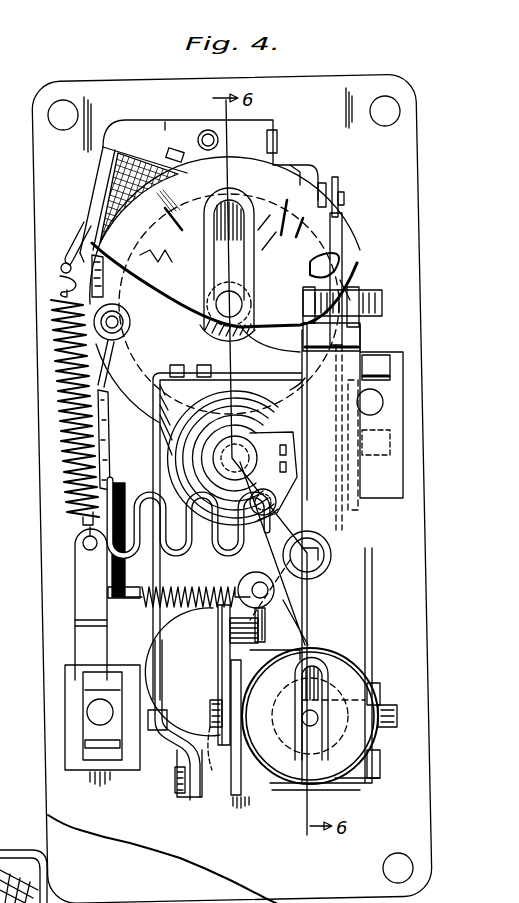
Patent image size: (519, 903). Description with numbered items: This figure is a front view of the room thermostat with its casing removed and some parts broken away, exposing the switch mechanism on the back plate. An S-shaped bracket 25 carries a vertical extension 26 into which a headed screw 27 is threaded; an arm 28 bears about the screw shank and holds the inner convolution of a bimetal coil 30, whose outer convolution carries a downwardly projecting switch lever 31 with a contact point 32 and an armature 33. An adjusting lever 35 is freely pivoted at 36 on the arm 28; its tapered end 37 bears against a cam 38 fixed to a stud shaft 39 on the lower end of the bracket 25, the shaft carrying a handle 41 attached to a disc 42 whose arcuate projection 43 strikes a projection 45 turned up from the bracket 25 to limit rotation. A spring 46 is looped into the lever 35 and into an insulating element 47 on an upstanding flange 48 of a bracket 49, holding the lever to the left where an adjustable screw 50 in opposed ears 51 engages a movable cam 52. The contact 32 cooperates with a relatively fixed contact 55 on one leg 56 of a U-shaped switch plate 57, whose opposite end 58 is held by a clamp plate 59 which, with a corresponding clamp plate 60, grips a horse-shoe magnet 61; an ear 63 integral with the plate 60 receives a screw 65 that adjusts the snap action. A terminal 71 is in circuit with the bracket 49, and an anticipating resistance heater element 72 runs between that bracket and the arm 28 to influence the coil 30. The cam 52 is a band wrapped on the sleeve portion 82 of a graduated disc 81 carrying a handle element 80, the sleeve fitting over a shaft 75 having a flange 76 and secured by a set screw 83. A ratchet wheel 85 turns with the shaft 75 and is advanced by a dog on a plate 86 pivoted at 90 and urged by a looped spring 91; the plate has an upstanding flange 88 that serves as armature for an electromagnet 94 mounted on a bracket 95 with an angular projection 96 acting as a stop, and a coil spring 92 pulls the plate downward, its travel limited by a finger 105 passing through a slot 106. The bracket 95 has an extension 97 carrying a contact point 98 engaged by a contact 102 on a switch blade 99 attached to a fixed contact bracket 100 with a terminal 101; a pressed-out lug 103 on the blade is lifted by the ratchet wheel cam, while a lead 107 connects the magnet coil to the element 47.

The bracket 25 is at (372, 612).
The extension 26 is at (240, 425).
The headed screw 27 is at (225, 457).
The arm 28 is at (318, 378).
The bimetal coil 30 is at (365, 362).
The switch lever 31 is at (155, 442).
The contact point 32 is at (167, 720).
The armature 33 is at (197, 792).
The adjusting lever 35 is at (360, 562).
The pivot 36 is at (322, 548).
The tapered end 37 is at (385, 685).
The cam 38 is at (345, 785).
The stud shaft 39 is at (305, 725).
The handle 41 is at (302, 760).
The disc 42 is at (360, 755).
The arcuate projection 43 is at (238, 688).
The projection 45 is at (380, 758).
The spring 46 is at (175, 585).
The insulating element 47 is at (110, 590).
The upstanding flange 48 is at (130, 492).
The bracket 49 is at (85, 618).
The adjustable screw 50 is at (370, 292).
The ears 51 is at (360, 320).
The cam 52 is at (340, 228).
The fixed contact 55 is at (212, 760).
The leg 56 is at (133, 734).
The switch plate 57 is at (185, 645).
The opposite end 58 is at (218, 622).
The clamp plate 59 is at (270, 592).
The clamp plate 60 is at (302, 625).
The horse-shoe magnet 61 is at (238, 648).
The ear 63 is at (380, 690).
The screw 65 is at (397, 714).
The terminal 71 is at (96, 726).
The anticipating resistance heater element 72 is at (108, 574).
The shaft 75 is at (217, 315).
The flange 76 is at (307, 266).
The handle element 80 is at (255, 212).
The graduated disc 81 is at (287, 183).
The sleeve portion 82 is at (264, 235).
The set screw 83 is at (290, 355).
The ratchet wheel 85 is at (273, 476).
The plate 86 is at (190, 256).
The flange 88 is at (100, 325).
The pivot 90 is at (58, 352).
The looped spring 91 is at (119, 364).
The coil spring 92 is at (65, 420).
The electromagnet 94 is at (116, 182).
The bracket 95 is at (165, 132).
The angular projection 96 is at (90, 224).
The extension 97 is at (291, 165).
The contact point 98 is at (330, 183).
The switch blade 99 is at (340, 183).
The contact bracket 100 is at (400, 462).
The terminal 101 is at (383, 402).
The contact 102 is at (345, 197).
The lug 103 is at (360, 285).
The finger 105 is at (60, 270).
The slot 106 is at (66, 258).
The lead 107 is at (60, 284).